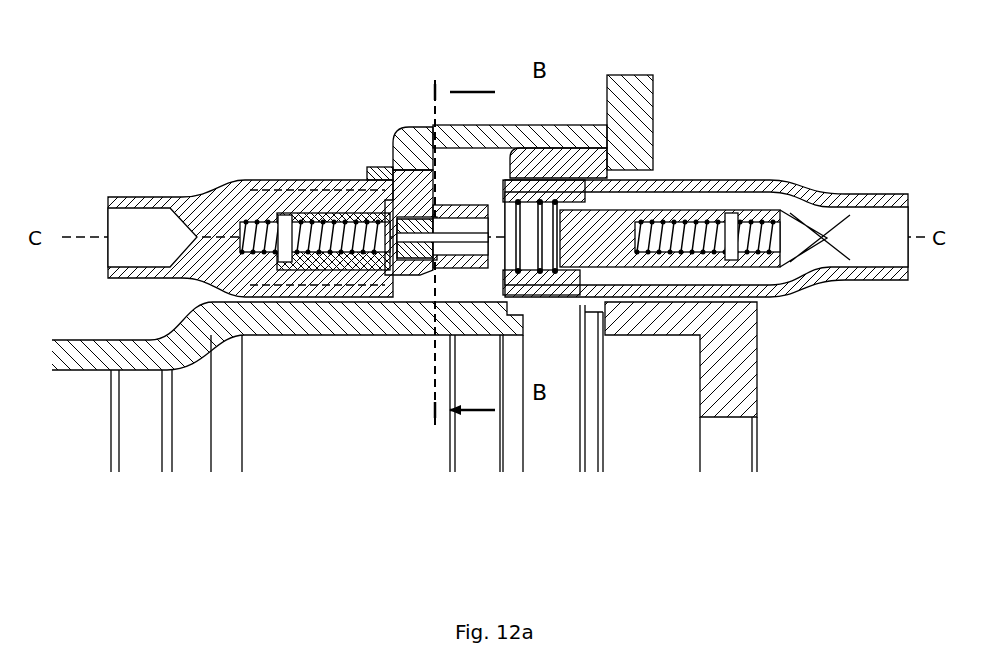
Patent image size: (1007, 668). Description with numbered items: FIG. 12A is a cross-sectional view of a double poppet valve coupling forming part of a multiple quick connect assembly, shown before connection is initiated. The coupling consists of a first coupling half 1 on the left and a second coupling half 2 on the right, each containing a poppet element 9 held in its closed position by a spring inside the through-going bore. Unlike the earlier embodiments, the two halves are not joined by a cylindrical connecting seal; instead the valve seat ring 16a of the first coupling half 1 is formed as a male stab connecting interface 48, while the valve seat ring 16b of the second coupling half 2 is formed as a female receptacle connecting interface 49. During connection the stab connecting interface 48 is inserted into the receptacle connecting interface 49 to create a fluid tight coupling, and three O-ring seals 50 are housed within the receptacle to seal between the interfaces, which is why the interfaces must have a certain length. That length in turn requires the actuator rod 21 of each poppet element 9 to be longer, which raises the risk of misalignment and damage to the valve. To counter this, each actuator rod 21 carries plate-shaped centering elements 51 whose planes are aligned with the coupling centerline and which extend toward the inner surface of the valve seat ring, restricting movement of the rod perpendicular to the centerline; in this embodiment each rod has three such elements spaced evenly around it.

The first coupling half 1 is at (270, 178).
The second coupling half 2 is at (766, 178).
The poppet element 9 is at (368, 210).
The valve seat ring 16a is at (410, 215).
The valve seat ring 16b is at (612, 205).
The actuator rod 21 is at (420, 244).
The stab connecting interface 48 is at (456, 205).
The receptacle connecting interface 49 is at (530, 190).
The O-ring seals 50 is at (518, 275).
The plate-shaped centering elements 51 is at (424, 256).